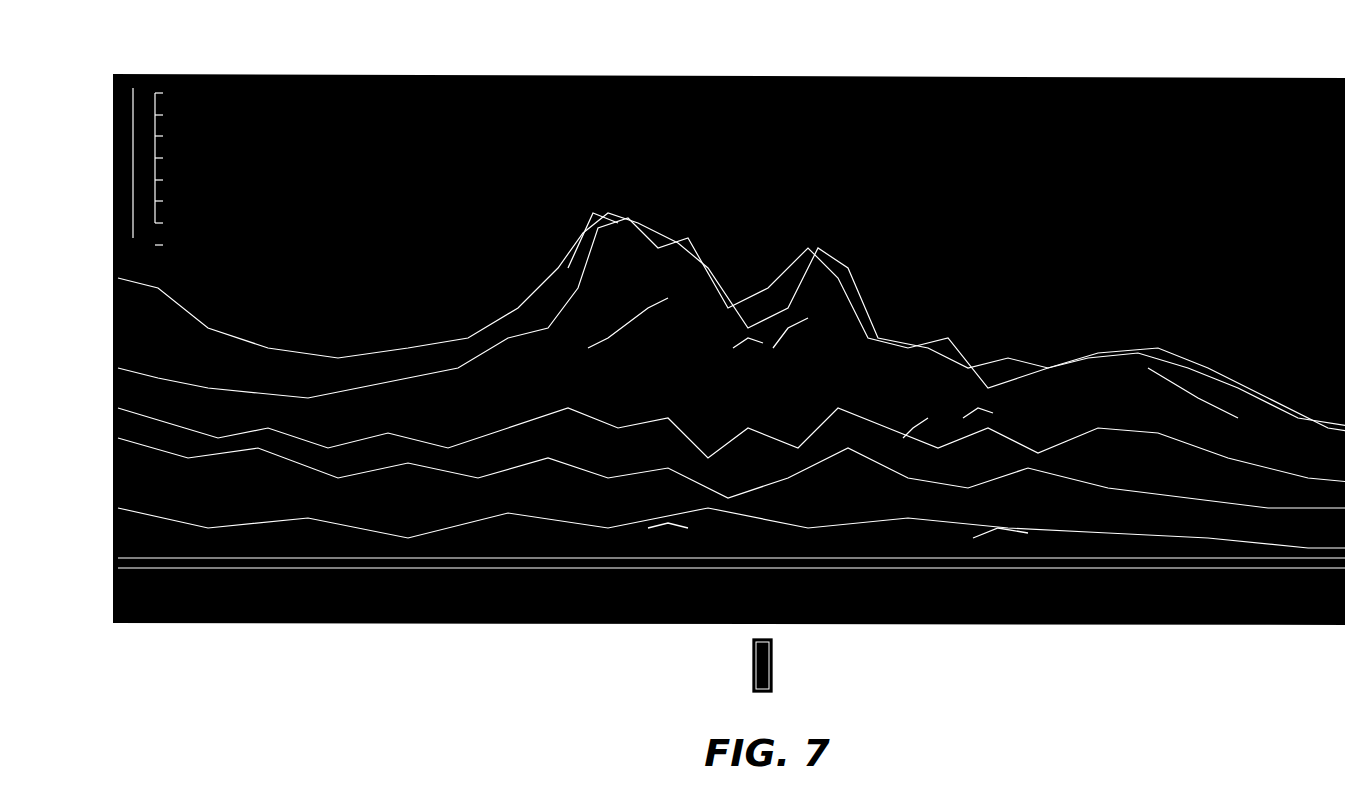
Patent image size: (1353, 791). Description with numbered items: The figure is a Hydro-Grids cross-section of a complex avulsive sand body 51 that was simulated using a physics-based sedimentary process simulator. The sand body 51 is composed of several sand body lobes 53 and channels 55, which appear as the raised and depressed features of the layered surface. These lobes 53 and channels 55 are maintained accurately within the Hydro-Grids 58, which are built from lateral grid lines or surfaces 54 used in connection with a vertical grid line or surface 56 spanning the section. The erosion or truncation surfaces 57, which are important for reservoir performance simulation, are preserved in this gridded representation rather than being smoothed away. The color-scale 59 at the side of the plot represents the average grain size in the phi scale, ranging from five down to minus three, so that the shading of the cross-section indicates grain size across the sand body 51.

The complex avulsive sand body 51 is at (122, 416).
The sand body lobes 53 is at (588, 210).
The lateral grid lines or surfaces 54 is at (670, 520).
The channels 55 is at (740, 330).
The vertical grid line or surface 56 is at (1015, 520).
The erosion or truncation surfaces 57 is at (595, 335).
The Hydro-Grids 58 is at (760, 545).
The color-scale 59 is at (125, 160).